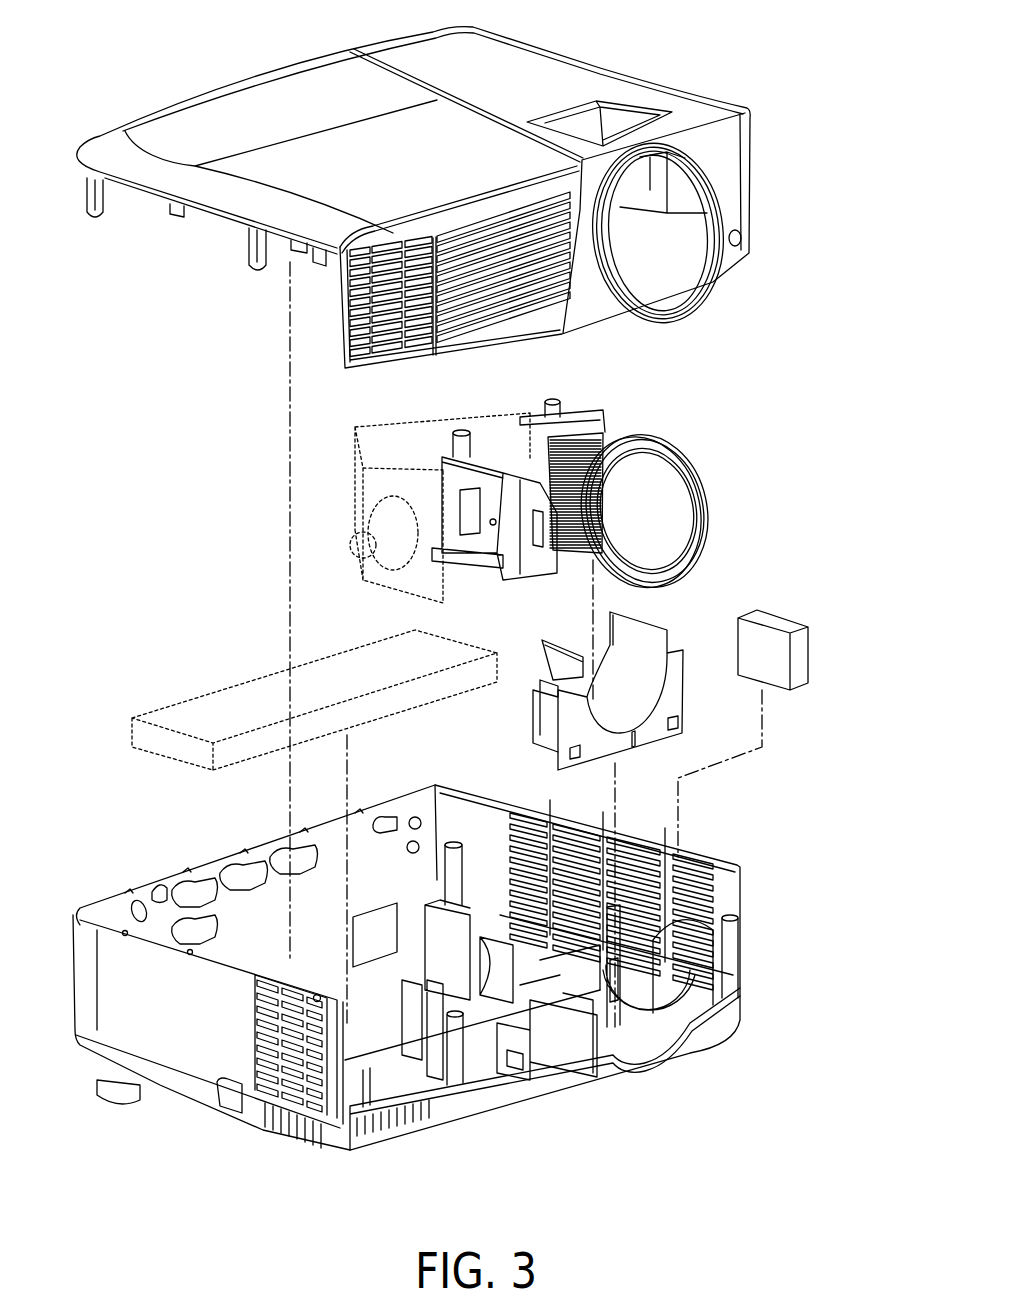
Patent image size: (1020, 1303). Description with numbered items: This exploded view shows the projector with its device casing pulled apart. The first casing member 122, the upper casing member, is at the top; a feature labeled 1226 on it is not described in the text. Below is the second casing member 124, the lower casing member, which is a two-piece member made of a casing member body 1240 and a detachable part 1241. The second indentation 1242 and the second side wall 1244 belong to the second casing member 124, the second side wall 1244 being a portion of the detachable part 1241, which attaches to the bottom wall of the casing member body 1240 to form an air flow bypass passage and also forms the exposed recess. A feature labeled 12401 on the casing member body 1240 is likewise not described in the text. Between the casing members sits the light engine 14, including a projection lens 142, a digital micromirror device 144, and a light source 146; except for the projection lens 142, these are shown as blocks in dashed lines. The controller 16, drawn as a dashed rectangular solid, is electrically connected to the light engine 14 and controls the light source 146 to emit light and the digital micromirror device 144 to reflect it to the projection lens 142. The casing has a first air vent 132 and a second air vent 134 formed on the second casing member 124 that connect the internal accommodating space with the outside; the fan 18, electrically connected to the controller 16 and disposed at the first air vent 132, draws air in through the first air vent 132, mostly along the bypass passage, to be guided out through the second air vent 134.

The first casing member 122 is at (555, 67).
The opening of upper cover 1226 is at (632, 115).
The light engine 14 is at (688, 388).
The digital micromirror device 144 is at (478, 425).
The projection lens 142 is at (680, 507).
The light source 146 is at (358, 540).
The controller 16 is at (225, 687).
The detachable part 1241 is at (675, 652).
The second indentation 1242 is at (593, 697).
The second side wall 1244 is at (556, 660).
The fan 18 is at (808, 668).
The first air vent 132 is at (697, 897).
The lens notch of base 12401 is at (630, 1025).
The casing member body 1240 is at (603, 1077).
The second casing member 124 is at (431, 980).
The second air vent 134 is at (260, 1040).